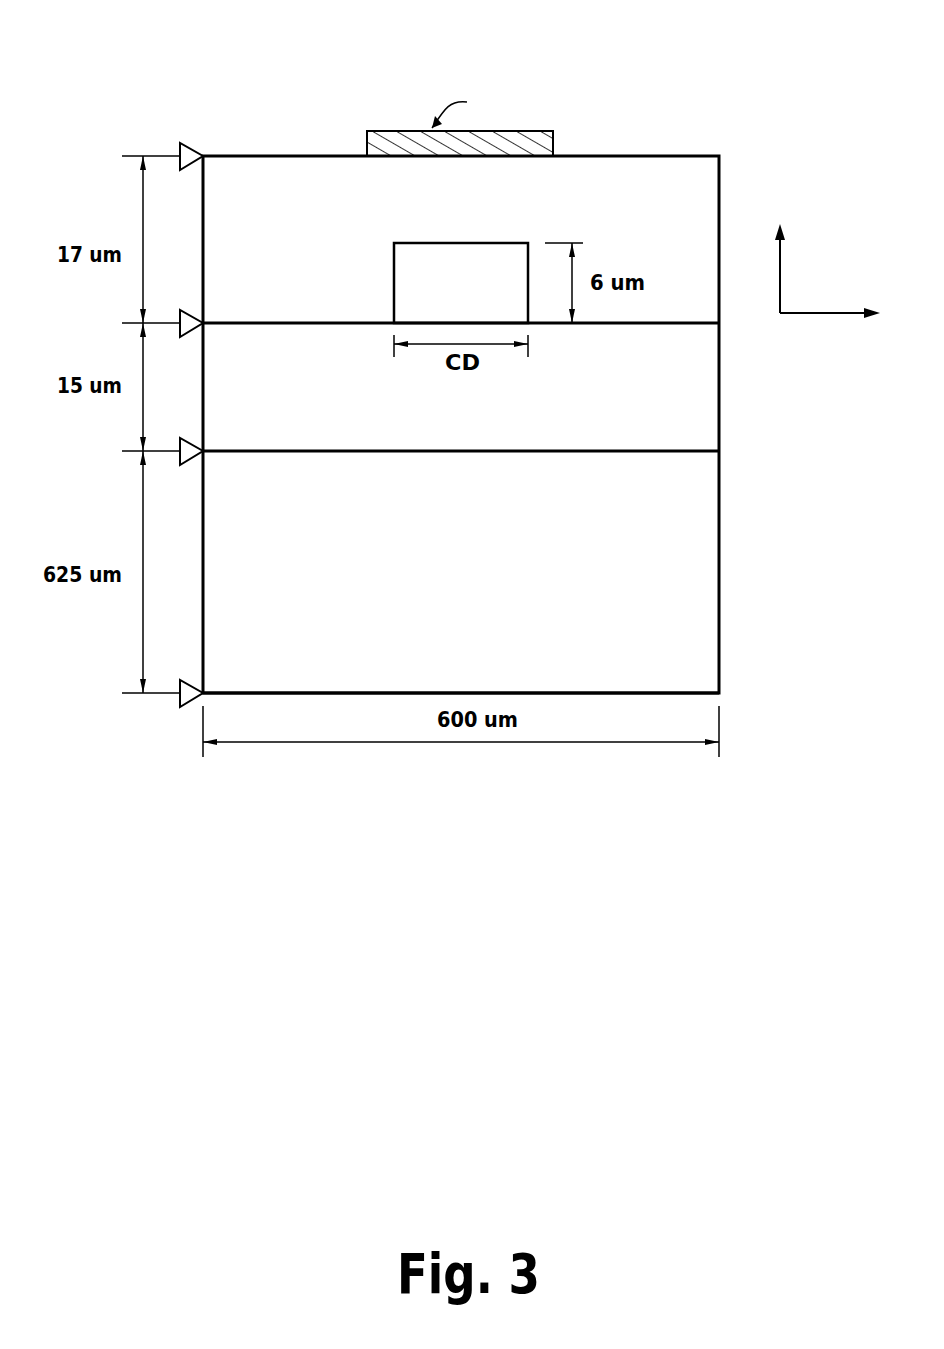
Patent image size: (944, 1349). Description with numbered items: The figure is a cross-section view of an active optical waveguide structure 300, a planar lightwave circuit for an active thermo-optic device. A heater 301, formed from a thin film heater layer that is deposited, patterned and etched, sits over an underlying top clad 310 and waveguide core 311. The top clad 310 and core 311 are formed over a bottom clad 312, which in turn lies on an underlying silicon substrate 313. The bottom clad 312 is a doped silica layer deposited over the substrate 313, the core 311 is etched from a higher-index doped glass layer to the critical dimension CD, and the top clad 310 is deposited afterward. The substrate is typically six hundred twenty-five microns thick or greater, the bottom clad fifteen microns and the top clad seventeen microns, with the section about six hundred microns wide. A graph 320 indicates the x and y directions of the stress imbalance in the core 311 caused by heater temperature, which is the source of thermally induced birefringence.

The active optical waveguide structure 300 is at (482, 28).
The heater 301 is at (540, 90).
The top clad 310 is at (720, 217).
The waveguide core 311 is at (392, 274).
The bottom clad 312 is at (720, 390).
The silicon substrate 313 is at (720, 573).
The graph 320 is at (815, 290).